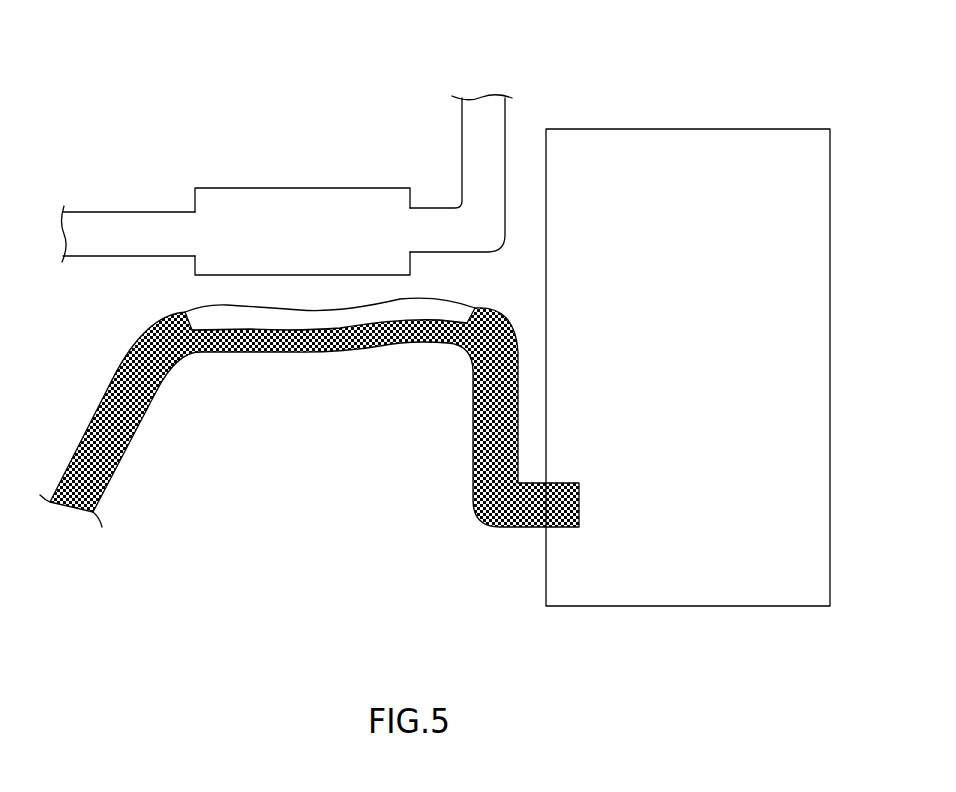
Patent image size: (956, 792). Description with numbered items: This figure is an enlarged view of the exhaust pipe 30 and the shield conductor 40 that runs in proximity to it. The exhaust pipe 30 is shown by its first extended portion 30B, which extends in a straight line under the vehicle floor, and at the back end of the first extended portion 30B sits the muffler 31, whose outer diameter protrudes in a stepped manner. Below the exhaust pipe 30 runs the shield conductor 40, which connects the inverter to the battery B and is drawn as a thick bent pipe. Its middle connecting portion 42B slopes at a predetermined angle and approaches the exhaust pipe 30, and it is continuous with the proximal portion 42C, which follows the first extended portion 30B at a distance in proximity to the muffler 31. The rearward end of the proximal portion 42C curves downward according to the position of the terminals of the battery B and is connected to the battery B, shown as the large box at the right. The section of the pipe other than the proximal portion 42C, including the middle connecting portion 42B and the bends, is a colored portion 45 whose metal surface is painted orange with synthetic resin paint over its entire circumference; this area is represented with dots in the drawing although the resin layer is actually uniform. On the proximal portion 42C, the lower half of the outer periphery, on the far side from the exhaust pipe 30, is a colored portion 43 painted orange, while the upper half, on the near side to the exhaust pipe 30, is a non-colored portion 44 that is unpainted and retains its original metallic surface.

The battery B is at (678, 129).
The exhaust pipe 30 is at (287, 171).
The first extended portion 30B is at (120, 212).
The muffler 31 is at (323, 188).
The shield conductor 40 is at (309, 436).
The middle connecting portion 42B is at (125, 458).
The proximal portion 42C is at (345, 352).
The colored portion 43 is at (257, 347).
The non-colored portion 44 is at (215, 313).
The colored portion 45 is at (108, 385).